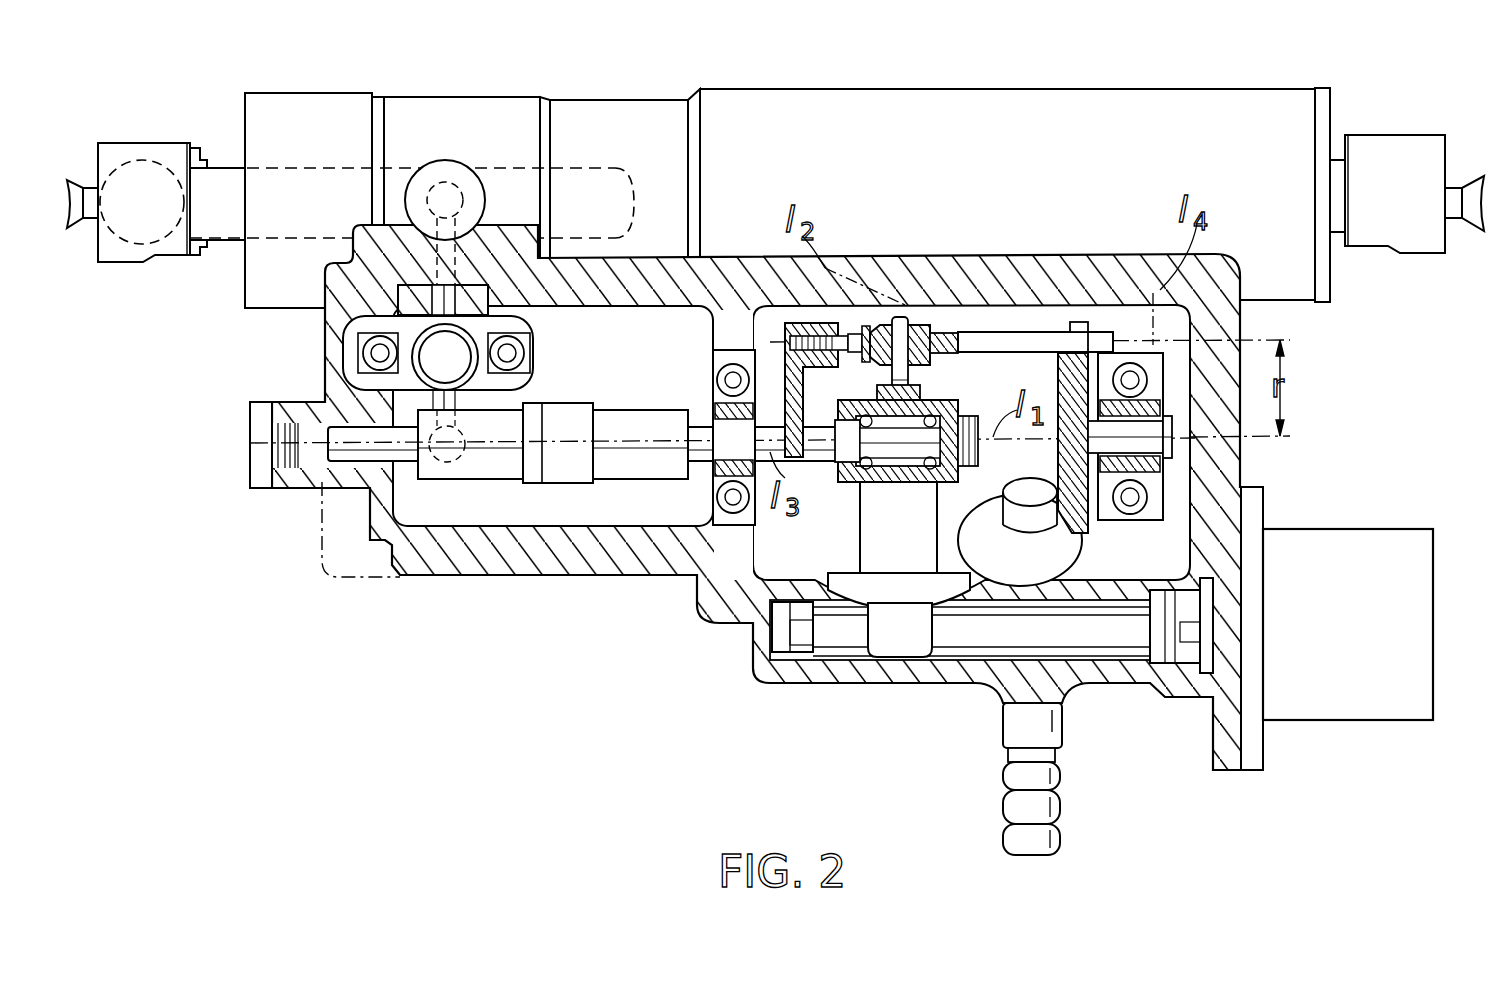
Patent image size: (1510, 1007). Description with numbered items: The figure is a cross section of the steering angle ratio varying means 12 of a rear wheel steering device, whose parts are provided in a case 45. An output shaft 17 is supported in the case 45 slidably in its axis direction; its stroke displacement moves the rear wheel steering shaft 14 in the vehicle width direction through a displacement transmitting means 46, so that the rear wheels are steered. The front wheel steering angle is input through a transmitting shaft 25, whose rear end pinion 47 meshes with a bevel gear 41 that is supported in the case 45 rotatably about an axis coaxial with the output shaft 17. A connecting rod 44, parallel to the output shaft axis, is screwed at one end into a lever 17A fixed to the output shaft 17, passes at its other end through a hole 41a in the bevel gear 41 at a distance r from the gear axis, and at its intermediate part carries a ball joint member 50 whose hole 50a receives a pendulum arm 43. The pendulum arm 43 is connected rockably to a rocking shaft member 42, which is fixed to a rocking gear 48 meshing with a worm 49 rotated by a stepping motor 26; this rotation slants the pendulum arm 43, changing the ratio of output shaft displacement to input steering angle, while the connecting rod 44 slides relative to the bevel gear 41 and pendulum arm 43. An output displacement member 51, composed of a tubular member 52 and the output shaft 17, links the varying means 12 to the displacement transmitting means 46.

The steering angle ratio varying means 12 is at (1323, 392).
The rear wheel steering shaft 14 is at (230, 166).
The output shaft 17 is at (710, 452).
The lever 17A is at (743, 378).
The transmitting shaft 25 is at (1007, 722).
The stepping motor 26 is at (1363, 540).
The bevel gear 41 is at (1077, 322).
The hole 41a is at (1093, 330).
The rocking shaft member 42 is at (920, 474).
The pendulum arm 43 is at (910, 380).
The connecting rod 44 is at (1012, 330).
The case 45 is at (540, 573).
The displacement transmitting means 46 is at (412, 284).
The pinion 47 is at (1060, 547).
The rocking gear 48 is at (860, 546).
The worm 49 is at (902, 646).
The ball joint member 50 is at (927, 310).
The hole 50a is at (912, 328).
The output displacement member 51 is at (560, 391).
The tubular member 52 is at (632, 418).